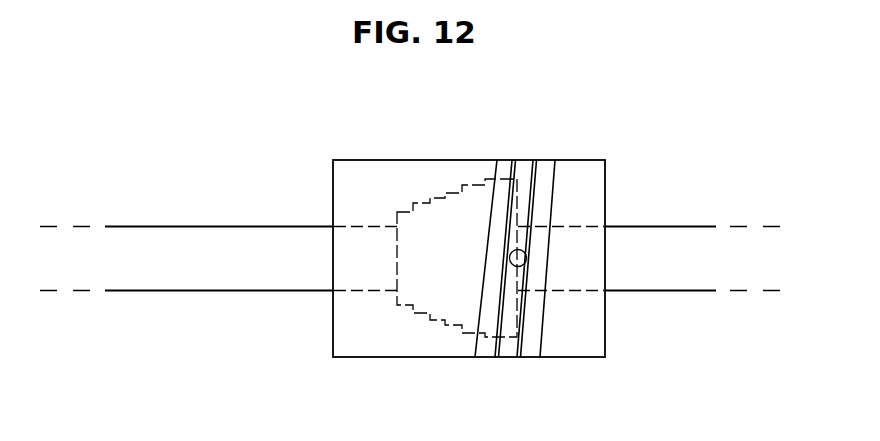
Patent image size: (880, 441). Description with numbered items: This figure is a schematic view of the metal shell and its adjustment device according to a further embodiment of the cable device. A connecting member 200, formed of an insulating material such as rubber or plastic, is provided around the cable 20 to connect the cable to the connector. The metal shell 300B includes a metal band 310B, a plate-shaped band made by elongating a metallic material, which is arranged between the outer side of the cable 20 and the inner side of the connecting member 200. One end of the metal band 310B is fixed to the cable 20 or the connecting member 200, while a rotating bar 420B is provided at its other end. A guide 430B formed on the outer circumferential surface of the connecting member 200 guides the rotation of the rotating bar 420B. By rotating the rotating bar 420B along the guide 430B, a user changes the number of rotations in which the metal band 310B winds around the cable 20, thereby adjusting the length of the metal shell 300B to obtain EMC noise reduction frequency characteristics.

The cable 20 is at (167, 237).
The connecting member 200 is at (368, 159).
The metal shell 300B is at (425, 312).
The metal band 310B is at (474, 331).
The rotating bar 420B is at (524, 264).
The guide 430B is at (554, 172).